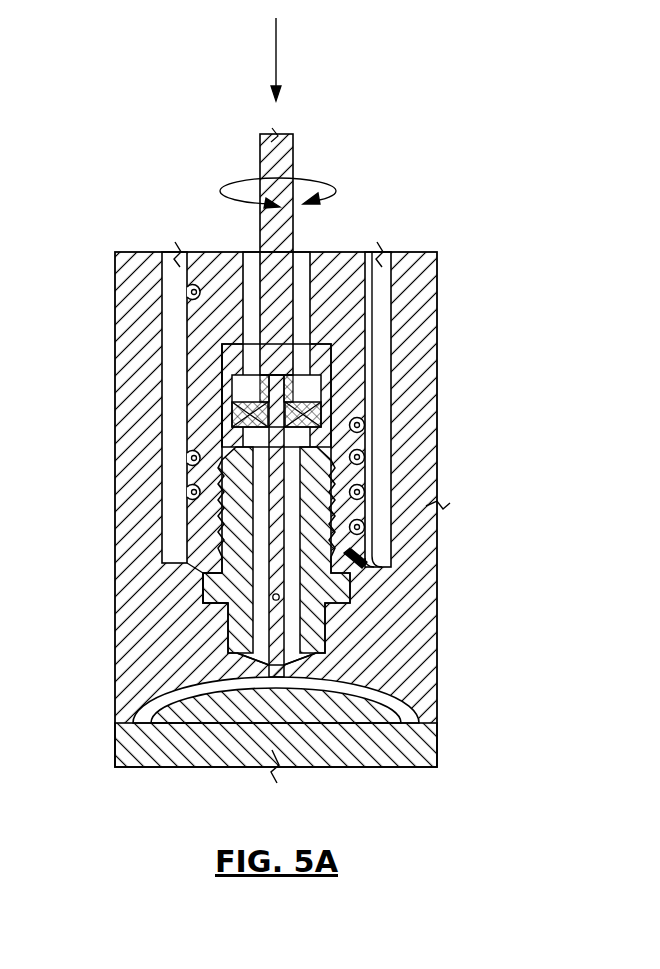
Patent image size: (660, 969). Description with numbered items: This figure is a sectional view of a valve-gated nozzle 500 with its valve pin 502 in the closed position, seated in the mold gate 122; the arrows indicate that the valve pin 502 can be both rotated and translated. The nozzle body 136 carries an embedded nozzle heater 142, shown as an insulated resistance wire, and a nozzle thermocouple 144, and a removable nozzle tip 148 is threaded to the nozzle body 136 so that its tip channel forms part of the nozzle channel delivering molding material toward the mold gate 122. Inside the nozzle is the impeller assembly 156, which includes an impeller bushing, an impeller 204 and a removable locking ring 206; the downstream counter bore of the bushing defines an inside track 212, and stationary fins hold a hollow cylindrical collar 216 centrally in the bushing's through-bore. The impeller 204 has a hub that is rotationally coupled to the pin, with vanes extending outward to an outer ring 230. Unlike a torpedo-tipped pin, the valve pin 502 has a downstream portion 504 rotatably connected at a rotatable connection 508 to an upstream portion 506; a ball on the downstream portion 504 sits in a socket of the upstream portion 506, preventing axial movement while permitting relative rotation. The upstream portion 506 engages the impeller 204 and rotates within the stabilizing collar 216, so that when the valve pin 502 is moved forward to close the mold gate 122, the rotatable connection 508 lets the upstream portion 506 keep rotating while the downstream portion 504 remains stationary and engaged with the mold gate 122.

The valve-gated nozzle 500 is at (319, 440).
The valve pin 502 is at (295, 235).
The nozzle heater 142 is at (187, 297).
The nozzle body 136 is at (213, 351).
The impeller assembly 156 is at (213, 390).
The inside track 212 is at (245, 408).
The removable locking ring 206 is at (187, 455).
The removable nozzle tip 148 is at (204, 575).
The nozzle thermocouple 144 is at (375, 322).
The collar 216 is at (292, 398).
The impeller 204 is at (322, 406).
The outer ring 230 is at (365, 425).
The upstream portion 506 is at (325, 462).
The rotatable connection 508 is at (282, 596).
The downstream portion 504 is at (312, 670).
The mold gate 122 is at (275, 660).